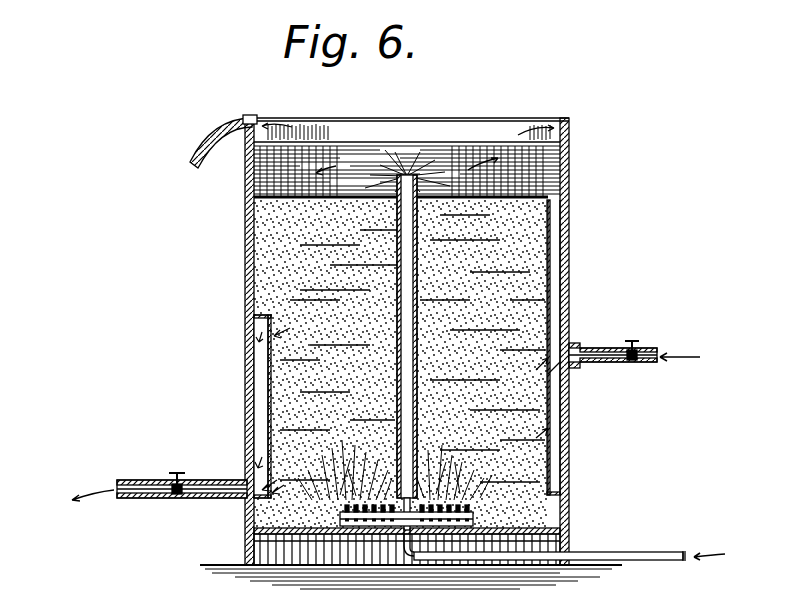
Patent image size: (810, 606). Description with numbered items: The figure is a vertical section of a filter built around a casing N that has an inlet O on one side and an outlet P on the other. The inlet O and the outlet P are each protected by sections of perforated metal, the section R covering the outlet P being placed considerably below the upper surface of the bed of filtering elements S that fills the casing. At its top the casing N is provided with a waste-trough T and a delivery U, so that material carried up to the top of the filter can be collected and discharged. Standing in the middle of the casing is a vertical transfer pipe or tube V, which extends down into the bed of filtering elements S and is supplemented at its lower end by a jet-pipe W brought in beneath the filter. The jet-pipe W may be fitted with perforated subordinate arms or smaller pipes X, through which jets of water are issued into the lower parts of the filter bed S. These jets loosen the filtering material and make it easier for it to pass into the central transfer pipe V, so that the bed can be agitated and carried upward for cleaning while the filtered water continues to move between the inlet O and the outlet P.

The waste-trough T is at (407, 160).
The delivery U is at (223, 142).
The casing N is at (247, 246).
The bed of filtering elements S is at (345, 300).
The vertical transfer pipe V is at (424, 325).
The side channel a is at (543, 347).
The perforated metal section R is at (271, 406).
The outlet P is at (174, 480).
The inlet O is at (624, 352).
The perforated subordinate arms X is at (473, 519).
The jet-pipe W is at (558, 546).